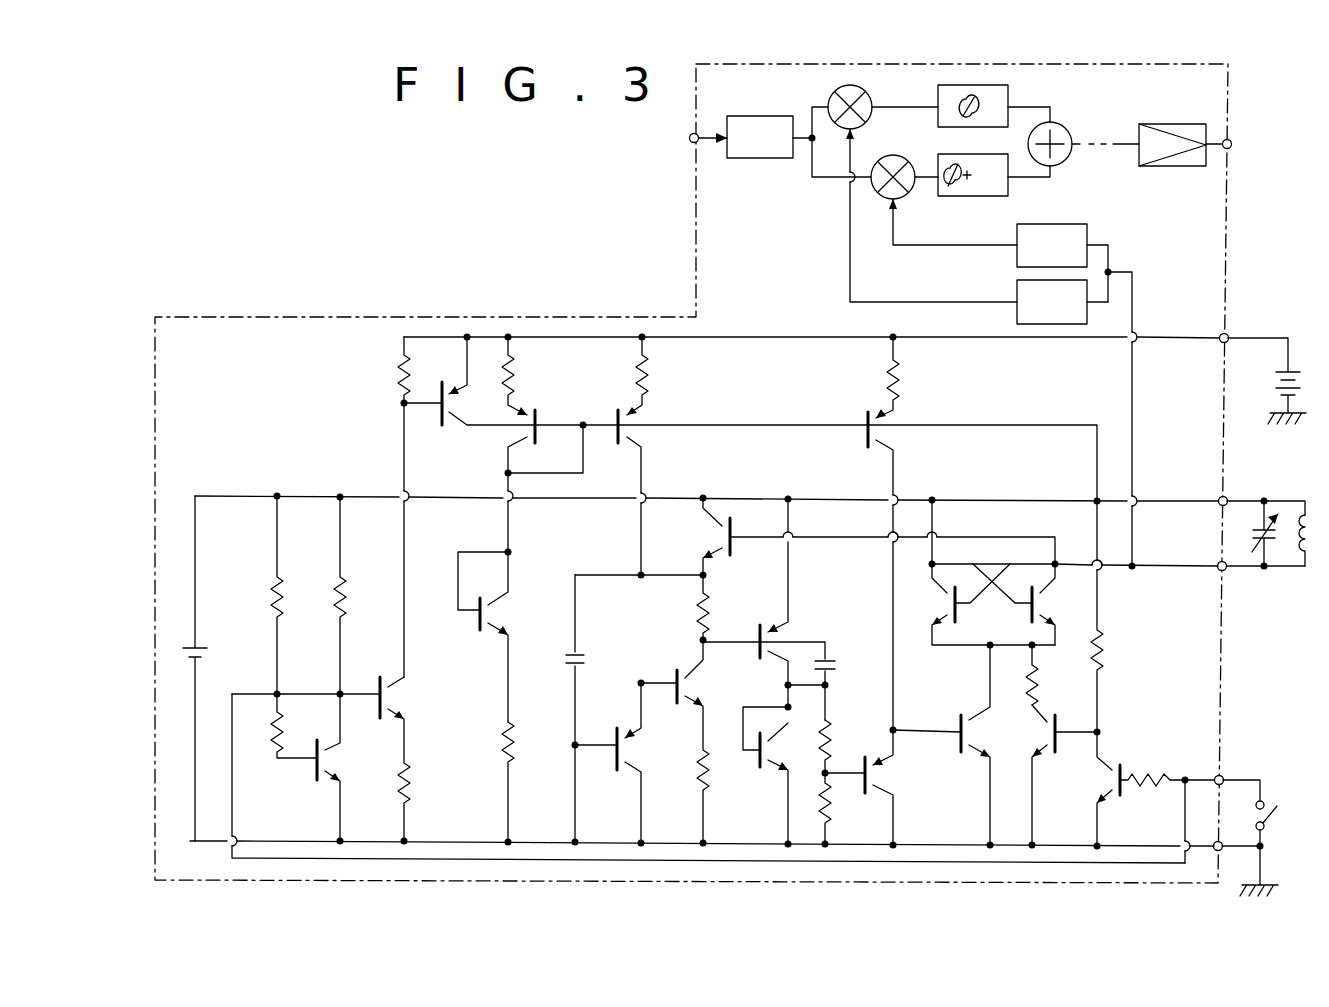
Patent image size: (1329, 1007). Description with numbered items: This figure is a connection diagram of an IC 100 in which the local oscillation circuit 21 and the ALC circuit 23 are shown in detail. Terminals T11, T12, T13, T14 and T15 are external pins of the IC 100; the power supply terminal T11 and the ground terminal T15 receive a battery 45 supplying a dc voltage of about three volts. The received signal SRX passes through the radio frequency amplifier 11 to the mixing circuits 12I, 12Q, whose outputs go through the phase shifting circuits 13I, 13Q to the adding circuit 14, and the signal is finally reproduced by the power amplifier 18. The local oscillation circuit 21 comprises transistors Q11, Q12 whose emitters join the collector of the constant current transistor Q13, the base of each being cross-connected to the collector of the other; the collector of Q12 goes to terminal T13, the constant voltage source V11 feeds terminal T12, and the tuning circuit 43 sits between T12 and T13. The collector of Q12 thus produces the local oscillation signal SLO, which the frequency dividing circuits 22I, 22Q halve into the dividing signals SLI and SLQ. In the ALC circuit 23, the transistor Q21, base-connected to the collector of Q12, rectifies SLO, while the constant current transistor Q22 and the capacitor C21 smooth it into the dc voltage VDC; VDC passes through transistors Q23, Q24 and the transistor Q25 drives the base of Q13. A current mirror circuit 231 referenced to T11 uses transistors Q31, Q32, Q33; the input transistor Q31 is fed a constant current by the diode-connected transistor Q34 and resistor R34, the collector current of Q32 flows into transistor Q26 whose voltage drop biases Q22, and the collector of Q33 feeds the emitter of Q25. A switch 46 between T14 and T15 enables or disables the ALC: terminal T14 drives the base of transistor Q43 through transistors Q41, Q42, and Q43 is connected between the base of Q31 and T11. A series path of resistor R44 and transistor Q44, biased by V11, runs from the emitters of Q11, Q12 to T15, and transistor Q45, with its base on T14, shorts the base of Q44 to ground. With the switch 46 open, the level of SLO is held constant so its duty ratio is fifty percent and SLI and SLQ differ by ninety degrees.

The IC 100 is at (1222, 652).
The received signal SRX is at (712, 124).
The radio frequency amplifier 11 is at (760, 160).
The mixing circuit 12I is at (832, 94).
The mixing circuit 12Q is at (910, 203).
The phase shifting circuit 13I is at (1020, 80).
The phase shifting circuit 13Q is at (975, 200).
The adding circuit 14 is at (1070, 157).
The power amplifier 18 is at (1180, 167).
The frequency dividing circuit 22I is at (1078, 222).
The frequency dividing circuit 22Q is at (1012, 312).
The frequency dividing signal SLI is at (950, 248).
The frequency dividing signal SLQ is at (892, 302).
The local oscillation signal SLO is at (1075, 555).
The power supply terminal T11 is at (1230, 347).
The battery 45 is at (1268, 395).
The current mirror circuit 231 is at (777, 396).
The transistor Q43 is at (442, 438).
The transistor Q31 is at (546, 414).
The transistor Q32 is at (612, 448).
The transistor Q33 is at (860, 440).
The terminal T12 is at (1228, 495).
The terminal T13 is at (1226, 572).
The tuning circuit 43 is at (1310, 604).
The constant voltage source V11 is at (198, 656).
The transistor Q41 is at (312, 765).
The transistor Q42 is at (375, 716).
The transistor Q34 is at (477, 628).
The resistor R34 is at (516, 730).
The ALC circuit 23 is at (859, 624).
The dc voltage VDC is at (595, 573).
The capacitor C21 is at (584, 665).
The transistor Q26 is at (612, 770).
The transistor Q22 is at (673, 705).
The transistor Q21 is at (732, 548).
The transistor Q23 is at (757, 660).
The transistor Q24 is at (755, 770).
The transistor Q25 is at (862, 795).
The local oscillation circuit 21 is at (1005, 528).
The transistor Q11 is at (948, 601).
The transistor Q12 is at (1028, 620).
The transistor Q13 is at (957, 750).
The resistor R44 is at (1040, 700).
The transistor Q44 is at (1060, 740).
The transistor Q45 is at (1124, 795).
The terminal T14 is at (1224, 774).
The ground terminal T15 is at (1223, 850).
The switch 46 is at (1272, 812).